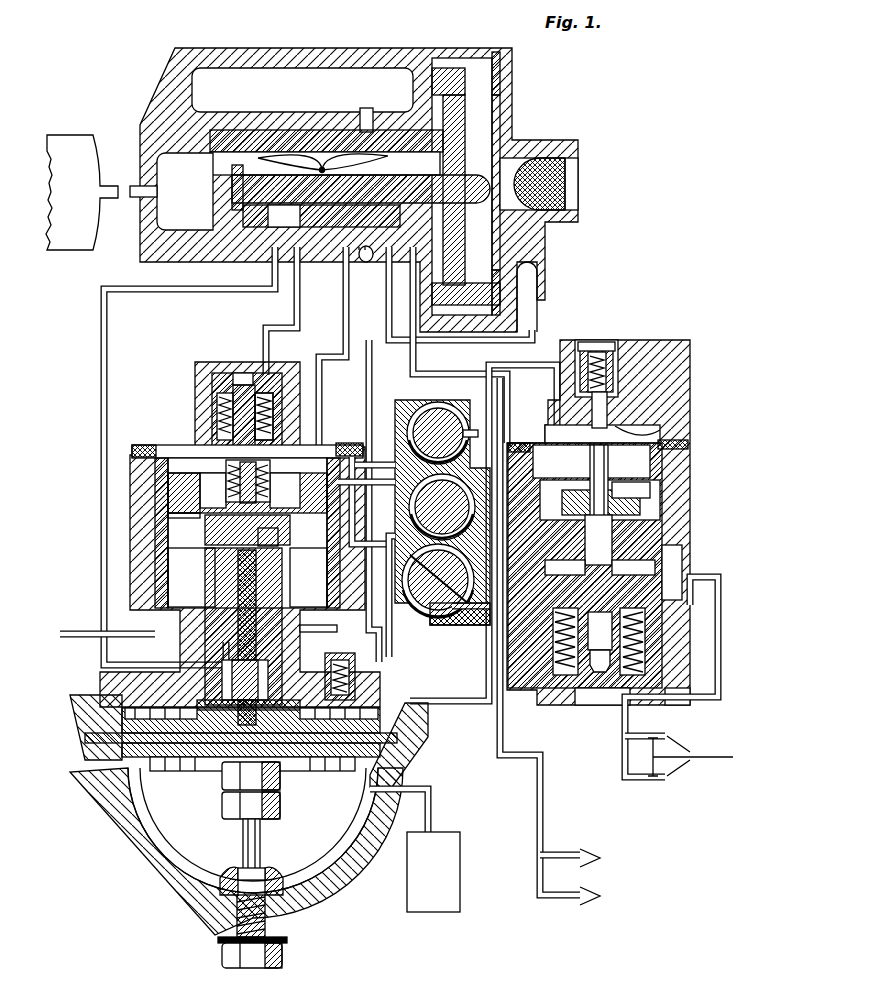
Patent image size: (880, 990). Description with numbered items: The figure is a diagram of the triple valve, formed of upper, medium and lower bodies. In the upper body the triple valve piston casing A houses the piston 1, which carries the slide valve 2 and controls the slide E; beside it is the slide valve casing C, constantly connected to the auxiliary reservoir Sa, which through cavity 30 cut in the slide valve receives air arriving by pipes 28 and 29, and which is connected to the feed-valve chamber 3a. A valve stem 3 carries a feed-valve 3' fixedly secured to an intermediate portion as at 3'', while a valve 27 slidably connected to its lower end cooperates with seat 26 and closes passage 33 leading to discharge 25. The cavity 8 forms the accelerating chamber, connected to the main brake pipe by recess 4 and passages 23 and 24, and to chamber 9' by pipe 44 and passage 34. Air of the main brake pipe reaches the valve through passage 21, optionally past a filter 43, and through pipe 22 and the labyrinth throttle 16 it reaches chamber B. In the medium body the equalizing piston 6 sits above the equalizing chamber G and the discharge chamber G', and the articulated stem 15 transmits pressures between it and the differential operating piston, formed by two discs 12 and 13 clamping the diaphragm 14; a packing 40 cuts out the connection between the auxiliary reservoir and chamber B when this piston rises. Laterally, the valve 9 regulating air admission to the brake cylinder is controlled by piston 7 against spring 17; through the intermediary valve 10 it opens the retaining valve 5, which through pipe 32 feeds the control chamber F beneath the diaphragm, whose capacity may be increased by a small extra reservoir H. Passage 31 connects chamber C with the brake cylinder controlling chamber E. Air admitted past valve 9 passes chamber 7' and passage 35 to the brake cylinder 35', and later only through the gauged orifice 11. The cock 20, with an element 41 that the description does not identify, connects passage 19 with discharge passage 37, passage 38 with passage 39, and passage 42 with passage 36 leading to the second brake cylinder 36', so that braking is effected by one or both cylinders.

The piston 1 is at (466, 137).
The slide valve 2 is at (244, 215).
The valve stem 3 is at (224, 410).
The feed-valve 3' is at (211, 416).
The intermediate portion of valve stem 3'' is at (282, 412).
The feed-valve chamber 3a is at (272, 376).
The recess 4 is at (366, 263).
The retaining valve 5 is at (617, 400).
The equalizing piston 6 is at (172, 505).
The piston 7 is at (639, 658).
The chamber 7' is at (632, 568).
The accelerating chamber 8 is at (302, 90).
The valve 9 is at (606, 565).
The chamber 9' is at (657, 479).
The intermediary valve 10 is at (655, 424).
The gauged orifice 11 is at (662, 533).
The disc 12 is at (124, 723).
The disc 13 is at (130, 760).
The diaphragm 14 is at (100, 745).
The articulated stem 15 is at (215, 645).
The throttle 16 is at (378, 686).
The spring 17 is at (646, 661).
The passage 19 is at (386, 462).
The cock 20 is at (452, 418).
The passage 21 is at (576, 173).
The pipe 22 is at (538, 293).
The passage 23 is at (448, 293).
The passage 24 is at (366, 279).
The discharge 25 is at (153, 630).
The seat 26 is at (225, 535).
The valve 27 is at (170, 518).
The pipe 28 is at (338, 612).
The pipe 29 is at (189, 456).
The cavity 30 is at (321, 216).
The passage 31 is at (484, 345).
The pipe 32 is at (483, 522).
The passage 33 is at (266, 542).
The passage 34 is at (352, 444).
The passage 35 is at (674, 665).
The brake cylinder 35' is at (690, 770).
The passage 36 is at (520, 636).
The brake cylinder 36' is at (602, 871).
The discharge passage 37 is at (466, 448).
The passage 38 is at (368, 492).
The passage 39 is at (387, 600).
The packing 40 is at (222, 681).
The lever 41 is at (433, 600).
The passage 42 is at (522, 676).
The filter 43 is at (567, 196).
The pipe 44 is at (332, 347).
The triple valve piston casing A is at (466, 118).
The chamber B is at (330, 748).
The slide valve casing C is at (171, 191).
The brake cylinder controlling chamber E is at (602, 418).
The control chamber F is at (253, 830).
The equalizing chamber G is at (247, 533).
The discharge chamber G' is at (247, 577).
The extra reservoir H is at (427, 850).
The auxiliary reservoir Sa is at (82, 192).